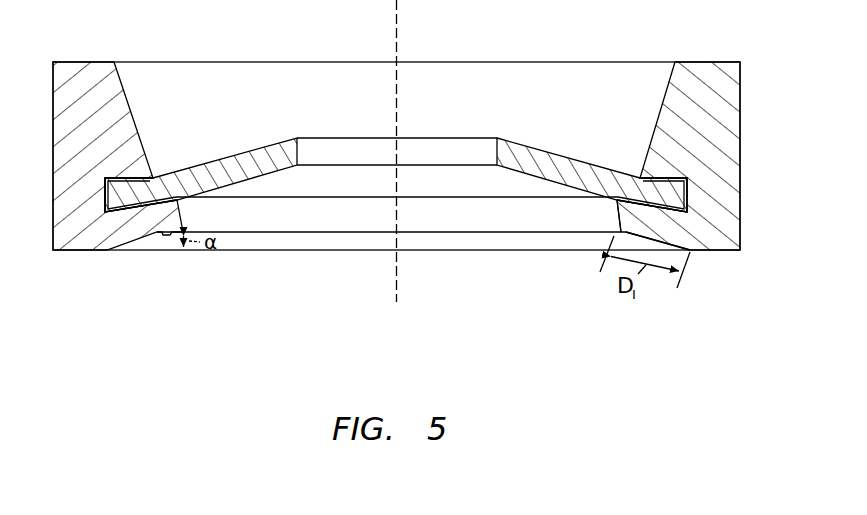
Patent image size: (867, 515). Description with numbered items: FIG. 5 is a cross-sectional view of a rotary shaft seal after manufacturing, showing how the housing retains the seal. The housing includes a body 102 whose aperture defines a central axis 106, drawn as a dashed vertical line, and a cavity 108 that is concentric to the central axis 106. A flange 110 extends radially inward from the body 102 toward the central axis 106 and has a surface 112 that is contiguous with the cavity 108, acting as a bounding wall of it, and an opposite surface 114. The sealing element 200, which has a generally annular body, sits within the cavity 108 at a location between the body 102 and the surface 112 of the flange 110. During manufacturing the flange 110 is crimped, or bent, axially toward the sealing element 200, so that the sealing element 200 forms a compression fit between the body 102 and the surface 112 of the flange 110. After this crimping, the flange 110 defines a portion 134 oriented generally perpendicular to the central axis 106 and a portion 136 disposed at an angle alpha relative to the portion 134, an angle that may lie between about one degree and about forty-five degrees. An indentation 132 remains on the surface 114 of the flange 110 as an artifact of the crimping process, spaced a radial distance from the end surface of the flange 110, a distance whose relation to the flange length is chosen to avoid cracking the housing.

The body 102 is at (742, 76).
The central axis 106 is at (397, 280).
The cavity 108 is at (116, 197).
The flange 110 is at (619, 207).
The surface 112 is at (160, 188).
The surface 114 is at (135, 251).
The indentation 132 is at (168, 234).
The portion 134 is at (713, 227).
The portion 136 is at (692, 251).
The sealing element 200 is at (545, 151).